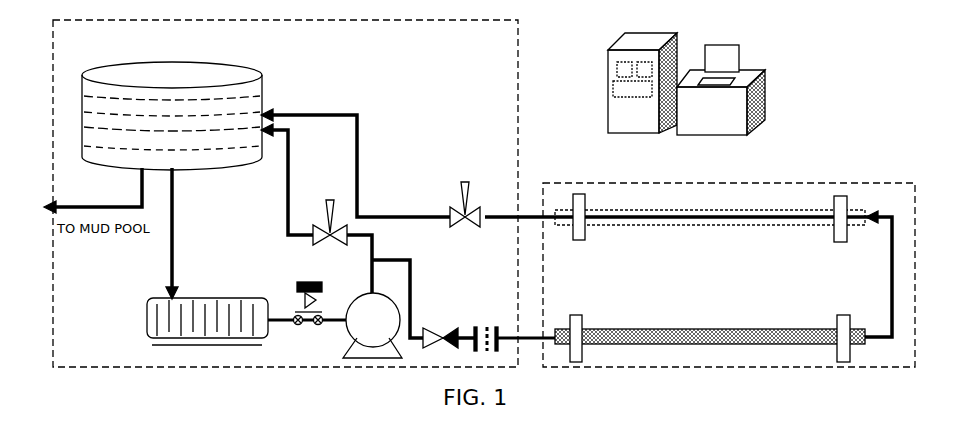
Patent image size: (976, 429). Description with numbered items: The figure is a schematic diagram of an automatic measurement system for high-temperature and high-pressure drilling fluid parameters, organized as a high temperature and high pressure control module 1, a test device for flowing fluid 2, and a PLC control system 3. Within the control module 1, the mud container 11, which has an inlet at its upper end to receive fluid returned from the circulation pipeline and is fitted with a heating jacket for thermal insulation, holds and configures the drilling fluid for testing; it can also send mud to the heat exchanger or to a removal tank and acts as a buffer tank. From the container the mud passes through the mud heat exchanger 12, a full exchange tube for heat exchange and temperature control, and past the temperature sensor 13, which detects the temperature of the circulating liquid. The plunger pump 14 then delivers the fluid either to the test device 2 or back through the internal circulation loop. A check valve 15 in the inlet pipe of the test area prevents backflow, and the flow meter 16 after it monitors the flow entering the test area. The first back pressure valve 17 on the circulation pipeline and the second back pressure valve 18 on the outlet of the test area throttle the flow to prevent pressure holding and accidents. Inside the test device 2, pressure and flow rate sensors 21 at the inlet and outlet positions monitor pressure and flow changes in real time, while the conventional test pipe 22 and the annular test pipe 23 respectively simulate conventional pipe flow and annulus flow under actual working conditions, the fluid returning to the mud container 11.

The high temperature and high pressure control module 1 is at (388, 28).
The test device for flowing fluid 2 is at (790, 188).
The PLC control system 3 is at (765, 43).
The mud container 11 is at (217, 75).
The mud heat exchanger 12 is at (185, 297).
The temperature sensor 13 is at (295, 275).
The plunger pump 14 is at (340, 272).
The check valve 15 is at (435, 318).
The flow meter 16 is at (487, 312).
The first back pressure valve 17 is at (342, 198).
The second back pressure valve 18 is at (453, 173).
The pressure and flow rate sensors 21 is at (587, 242).
The conventional test pipe 22 is at (663, 325).
The annular test pipe 23 is at (702, 230).